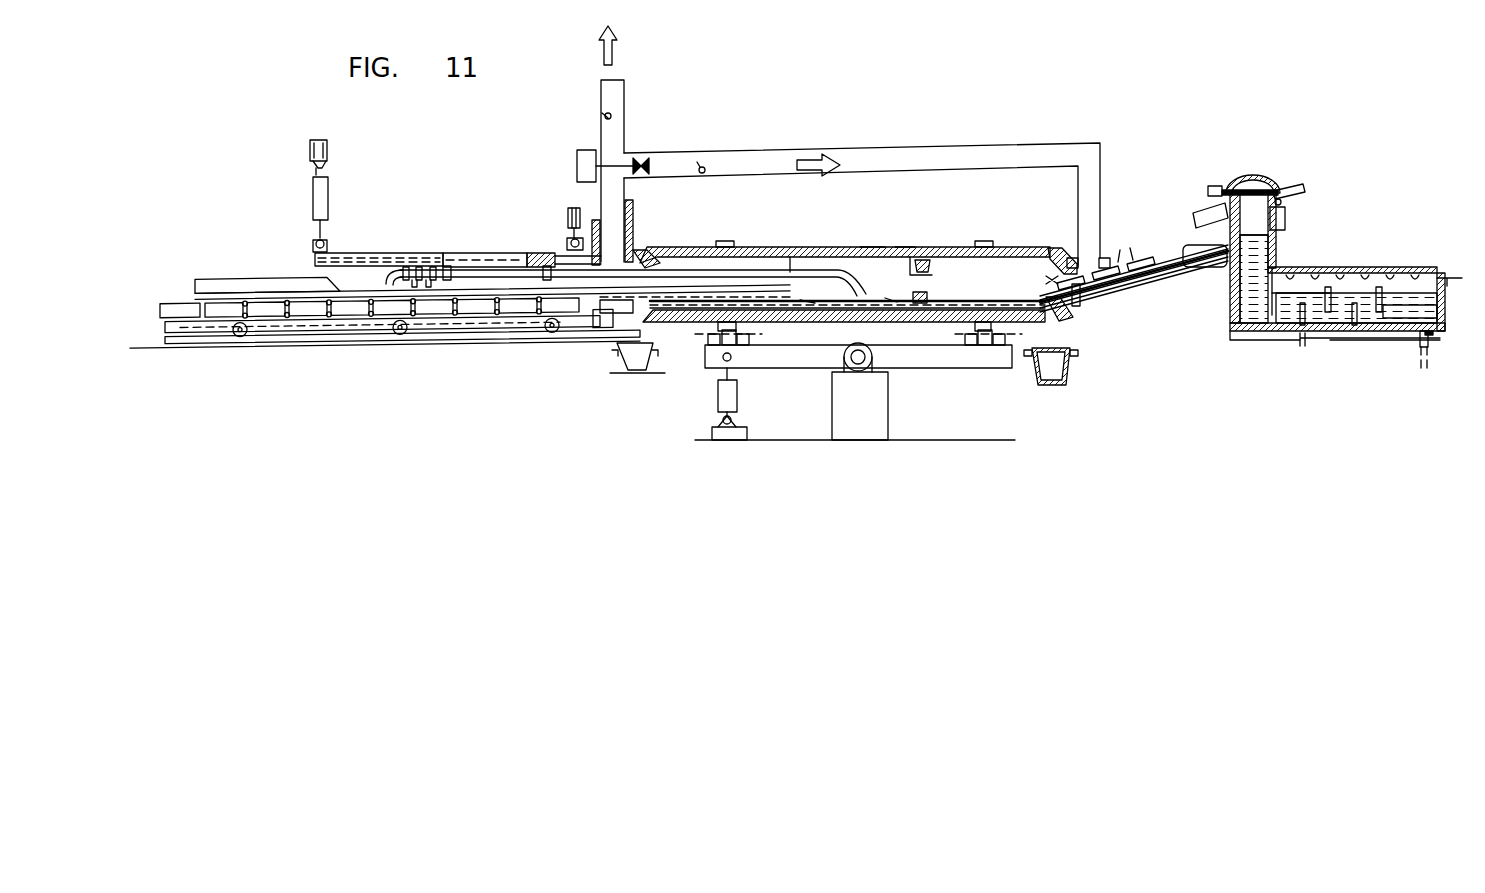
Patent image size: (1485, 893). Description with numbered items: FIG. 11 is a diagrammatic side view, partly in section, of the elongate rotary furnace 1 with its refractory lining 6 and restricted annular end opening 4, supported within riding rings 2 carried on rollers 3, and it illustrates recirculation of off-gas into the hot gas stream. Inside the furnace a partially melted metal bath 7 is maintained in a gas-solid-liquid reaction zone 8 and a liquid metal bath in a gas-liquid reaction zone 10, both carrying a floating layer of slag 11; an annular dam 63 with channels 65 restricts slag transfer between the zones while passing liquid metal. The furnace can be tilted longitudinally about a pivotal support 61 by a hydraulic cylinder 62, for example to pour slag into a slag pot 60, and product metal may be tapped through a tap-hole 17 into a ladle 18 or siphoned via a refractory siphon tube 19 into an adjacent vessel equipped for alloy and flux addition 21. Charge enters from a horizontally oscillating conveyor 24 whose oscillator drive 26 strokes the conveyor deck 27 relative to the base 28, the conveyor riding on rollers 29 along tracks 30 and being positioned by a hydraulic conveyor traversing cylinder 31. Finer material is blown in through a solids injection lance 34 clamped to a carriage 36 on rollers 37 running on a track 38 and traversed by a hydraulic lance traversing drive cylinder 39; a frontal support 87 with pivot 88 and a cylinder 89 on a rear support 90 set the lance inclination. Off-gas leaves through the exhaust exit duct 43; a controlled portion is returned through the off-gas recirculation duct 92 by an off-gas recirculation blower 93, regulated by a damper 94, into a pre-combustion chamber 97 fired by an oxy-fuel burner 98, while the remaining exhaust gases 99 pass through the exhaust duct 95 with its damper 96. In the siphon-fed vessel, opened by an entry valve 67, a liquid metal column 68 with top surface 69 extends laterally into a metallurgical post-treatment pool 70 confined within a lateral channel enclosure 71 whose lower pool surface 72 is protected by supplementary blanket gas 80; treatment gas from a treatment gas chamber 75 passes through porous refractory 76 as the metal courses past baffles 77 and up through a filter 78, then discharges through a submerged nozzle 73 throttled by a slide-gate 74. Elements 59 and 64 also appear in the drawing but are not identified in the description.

The rotary furnace 1 is at (845, 241).
The riding rings 2 is at (980, 240).
The rollers 3 is at (712, 338).
The annular end opening 4 is at (648, 268).
The refractory lining 6 is at (873, 247).
The partially melted metal bath 7 is at (700, 313).
The gas-solid-liquid reaction zone 8 is at (810, 302).
The gas-liquid reaction zone 10 is at (1001, 293).
The slag 11 is at (897, 300).
The tap-hole 17 is at (1050, 319).
The ladle 18 is at (1068, 371).
The refractory siphon tube 19 is at (1129, 278).
The alloy and flux addition 21 is at (1215, 196).
The conveyor 24 is at (460, 332).
The oscillator drive 26 is at (182, 302).
The conveyor deck 27 is at (522, 333).
The base 28 is at (220, 333).
The rollers 29 is at (402, 336).
The tracks 30 is at (360, 337).
The hydraulic conveyor traversing cylinder 31 is at (313, 336).
The solids injection lance 34 is at (816, 246).
The carriage 36 is at (537, 254).
The rollers 37 is at (468, 242).
The track 38 is at (372, 254).
The hydraulic lance traversing drive cylinder 39 is at (421, 254).
The exhaust exit duct 43 is at (615, 243).
The support beam 59 is at (848, 381).
The slag pot 60 is at (616, 352).
The pivotal support 61 is at (869, 357).
The hydraulic cylinder 62 is at (718, 396).
The annular dam 63 is at (937, 283).
The furnace wall 64 is at (905, 238).
The channels 65 is at (912, 262).
The entry valve 67 is at (1222, 270).
The liquid metal column 68 is at (1252, 246).
The top surface 69 is at (1267, 232).
The metallurgical post-treatment pool 70 is at (1309, 267).
The lateral channel enclosure 71 is at (1352, 244).
The pool surface 72 is at (1357, 268).
The submerged nozzle 73 is at (1430, 324).
The throttling slide-gate 74 is at (1392, 267).
The treatment gas chamber 75 is at (1295, 335).
The porous refractory 76 is at (1330, 338).
The baffles 77 is at (1366, 333).
The filter 78 is at (1355, 310).
The supplementary blanket gas 80 is at (1458, 296).
The frontal support 87 is at (573, 208).
The pivot 88 is at (572, 241).
The cylinder 89 is at (328, 192).
The rear support 90 is at (328, 152).
The off-gas recirculation duct 92 is at (860, 150).
The off-gas recirculation blower 93 is at (643, 158).
The damper 94 is at (703, 162).
The exhaust duct 95 is at (624, 90).
The damper 96 is at (604, 116).
The pre-combustion chamber 97 is at (1053, 266).
The oxy-fuel burner 98 is at (1128, 262).
The exhaust gases 99 is at (619, 49).